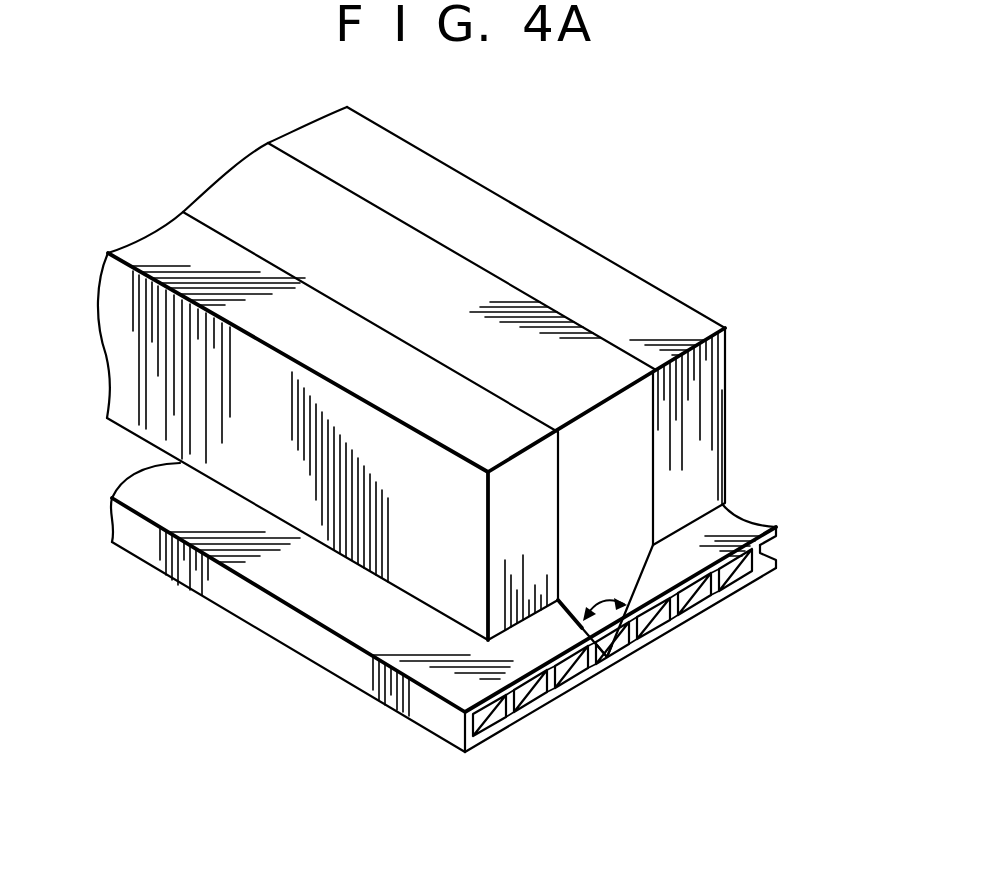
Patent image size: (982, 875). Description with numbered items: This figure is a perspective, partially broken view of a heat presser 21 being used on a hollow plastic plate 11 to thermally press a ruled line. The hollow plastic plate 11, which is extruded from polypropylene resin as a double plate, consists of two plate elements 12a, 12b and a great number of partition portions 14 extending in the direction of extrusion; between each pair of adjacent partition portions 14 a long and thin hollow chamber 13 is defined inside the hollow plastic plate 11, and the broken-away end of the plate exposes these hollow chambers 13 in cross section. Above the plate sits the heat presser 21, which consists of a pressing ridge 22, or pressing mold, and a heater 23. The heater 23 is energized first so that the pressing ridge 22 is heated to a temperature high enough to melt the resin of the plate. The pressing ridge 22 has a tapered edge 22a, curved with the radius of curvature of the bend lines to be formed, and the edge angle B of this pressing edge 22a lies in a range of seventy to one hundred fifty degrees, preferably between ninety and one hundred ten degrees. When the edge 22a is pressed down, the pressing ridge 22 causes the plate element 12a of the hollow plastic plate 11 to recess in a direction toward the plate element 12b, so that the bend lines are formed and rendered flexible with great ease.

The hollow plastic plate 11 is at (413, 722).
The plate element 12a is at (773, 532).
The plate element 12b is at (767, 570).
The hollow chambers 13 is at (727, 578).
The partition portions 14 is at (515, 700).
The heat presser 21 is at (547, 216).
The pressing ridge 22 is at (624, 530).
The edge 22a is at (608, 638).
The heater 23 is at (502, 500).